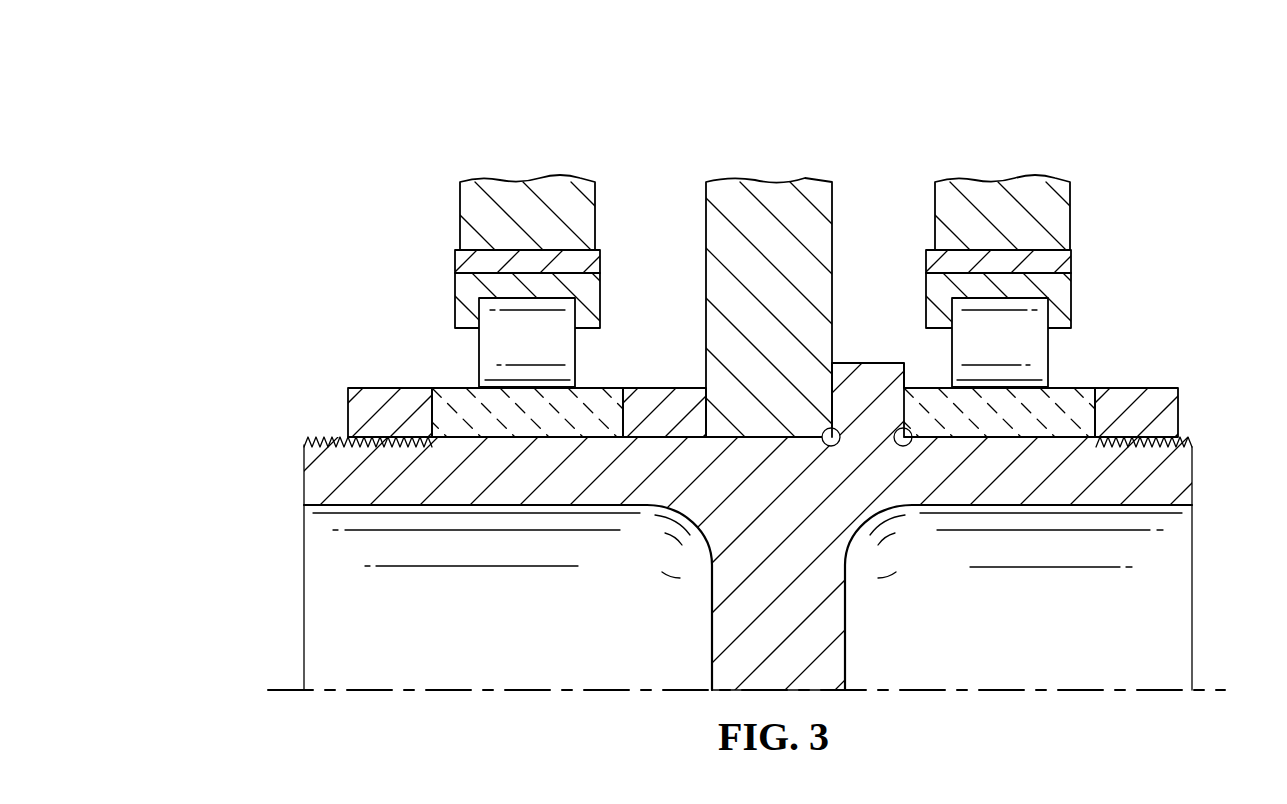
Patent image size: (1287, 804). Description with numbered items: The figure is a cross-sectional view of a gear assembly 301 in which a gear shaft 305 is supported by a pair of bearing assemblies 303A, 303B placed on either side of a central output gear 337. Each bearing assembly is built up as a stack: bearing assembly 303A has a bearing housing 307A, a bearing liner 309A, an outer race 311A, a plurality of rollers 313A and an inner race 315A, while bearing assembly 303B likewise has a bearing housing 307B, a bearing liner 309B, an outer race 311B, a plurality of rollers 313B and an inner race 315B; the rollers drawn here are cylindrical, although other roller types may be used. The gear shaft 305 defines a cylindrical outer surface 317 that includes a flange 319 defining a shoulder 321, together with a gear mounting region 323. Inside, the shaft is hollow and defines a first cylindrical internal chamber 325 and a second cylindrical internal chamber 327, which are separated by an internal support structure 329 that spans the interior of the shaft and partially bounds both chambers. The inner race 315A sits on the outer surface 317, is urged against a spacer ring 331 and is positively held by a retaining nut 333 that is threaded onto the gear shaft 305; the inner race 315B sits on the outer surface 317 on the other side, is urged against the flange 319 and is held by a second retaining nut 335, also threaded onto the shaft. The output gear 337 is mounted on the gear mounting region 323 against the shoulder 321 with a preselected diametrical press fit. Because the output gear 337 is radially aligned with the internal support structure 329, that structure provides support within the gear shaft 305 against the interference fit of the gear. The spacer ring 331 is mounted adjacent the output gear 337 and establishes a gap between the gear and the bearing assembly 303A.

The gear assembly 301 is at (276, 103).
The bearing assembly 303A is at (507, 163).
The bearing assembly 303B is at (1020, 163).
The gear shaft 305 is at (262, 452).
The bearing housing 307A is at (468, 213).
The bearing housing 307B is at (1058, 213).
The bearing liner 309A is at (462, 260).
The bearing liner 309B is at (1070, 260).
The outer race 311A is at (462, 296).
The outer race 311B is at (1070, 296).
The rollers 313A is at (487, 357).
The rollers 313B is at (1048, 357).
The inner race 315A is at (615, 397).
The inner race 315B is at (1105, 402).
The cylindrical outer surface 317 is at (955, 432).
The flange 319 is at (870, 345).
The shoulder 321 is at (830, 375).
The gear mounting region 323 is at (760, 448).
The first cylindrical internal chamber 325 is at (503, 640).
The second cylindrical internal chamber 327 is at (1068, 638).
The internal support structure 329 is at (862, 674).
The spacer ring 331 is at (665, 400).
The retaining nut 333 is at (352, 410).
The retaining nut 335 is at (1172, 410).
The output gear 337 is at (770, 182).